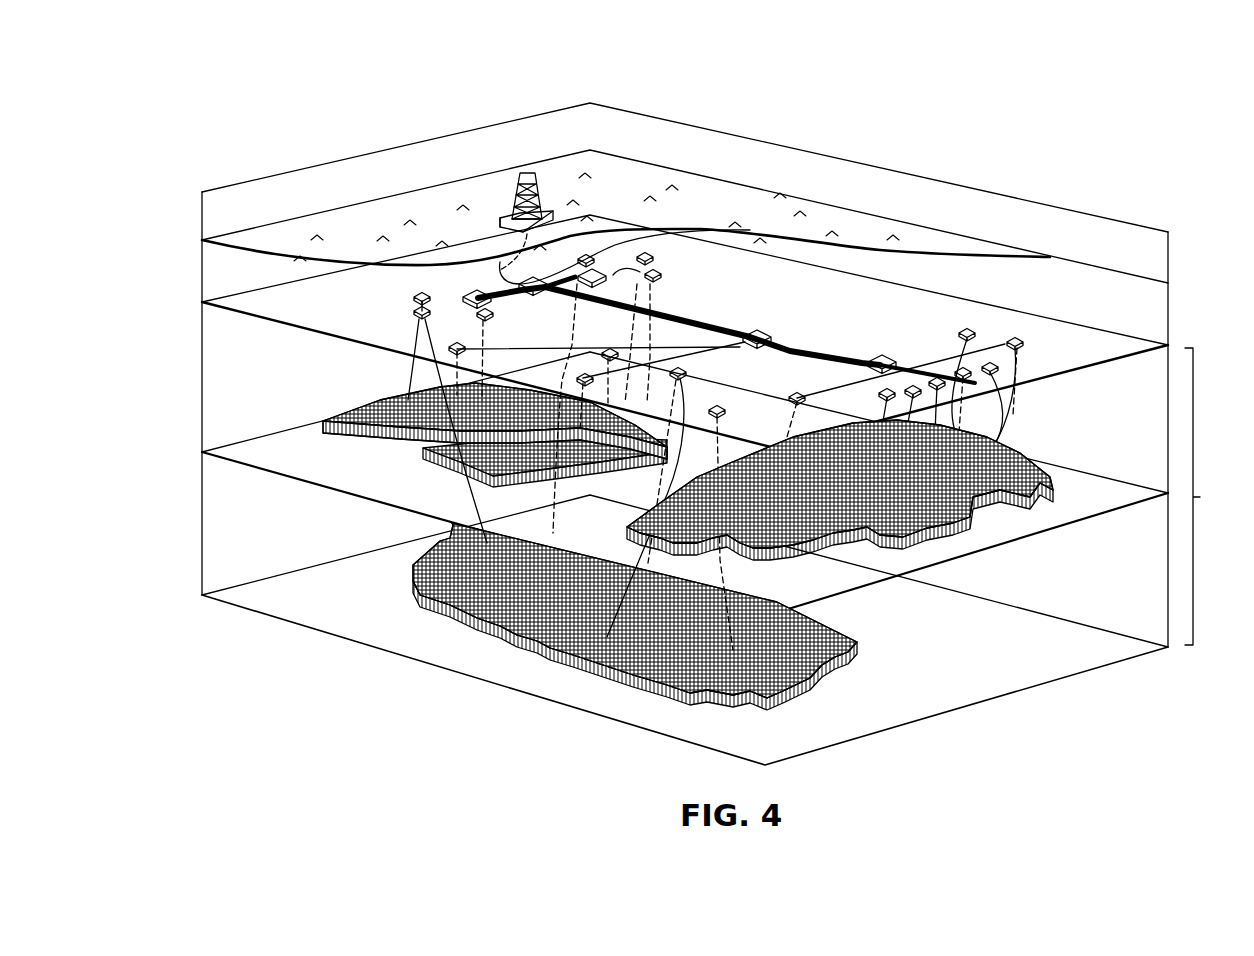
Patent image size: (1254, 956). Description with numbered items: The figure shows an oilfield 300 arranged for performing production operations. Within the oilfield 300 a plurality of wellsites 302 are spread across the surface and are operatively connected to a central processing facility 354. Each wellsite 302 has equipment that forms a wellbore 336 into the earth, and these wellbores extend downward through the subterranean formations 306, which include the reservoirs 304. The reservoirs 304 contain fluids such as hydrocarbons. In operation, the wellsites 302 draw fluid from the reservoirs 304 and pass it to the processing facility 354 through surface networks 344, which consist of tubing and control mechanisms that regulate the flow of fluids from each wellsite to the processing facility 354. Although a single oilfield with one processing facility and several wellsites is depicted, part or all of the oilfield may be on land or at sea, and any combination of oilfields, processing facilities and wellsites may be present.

The oilfield 300 is at (241, 112).
The wellsites 302 is at (800, 382).
The reservoirs 304 is at (921, 553).
The subterranean formations 306 is at (1212, 496).
The wellbore 336 is at (993, 446).
The surface networks 344 is at (450, 313).
The central processing facility 354 is at (505, 182).